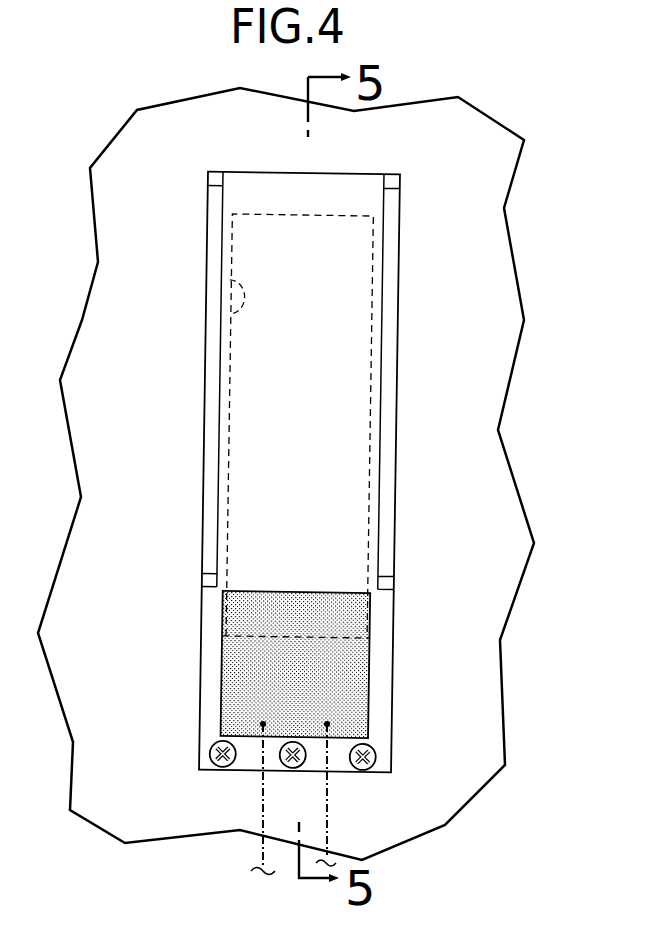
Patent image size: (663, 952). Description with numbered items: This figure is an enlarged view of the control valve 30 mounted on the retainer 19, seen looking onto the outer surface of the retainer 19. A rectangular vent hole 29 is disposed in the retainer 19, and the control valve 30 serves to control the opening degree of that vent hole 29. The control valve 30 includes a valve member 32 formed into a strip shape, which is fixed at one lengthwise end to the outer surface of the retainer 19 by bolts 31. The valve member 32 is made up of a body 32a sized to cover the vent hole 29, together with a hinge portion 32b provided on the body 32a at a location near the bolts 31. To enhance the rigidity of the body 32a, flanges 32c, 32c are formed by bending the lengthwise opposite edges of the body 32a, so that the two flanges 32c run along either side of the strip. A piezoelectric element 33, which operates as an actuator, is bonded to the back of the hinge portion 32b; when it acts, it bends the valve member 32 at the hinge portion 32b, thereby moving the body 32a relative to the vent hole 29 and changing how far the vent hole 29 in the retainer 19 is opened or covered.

The retainer 19 is at (474, 367).
The vent hole 29 is at (230, 322).
The control valve 30 is at (422, 282).
The bolts 31 is at (291, 769).
The valve member 32 is at (400, 492).
The body 32a is at (277, 220).
The hinge portion 32b is at (381, 675).
The flanges 32c is at (207, 413).
The piezoelectric element 33 is at (351, 702).